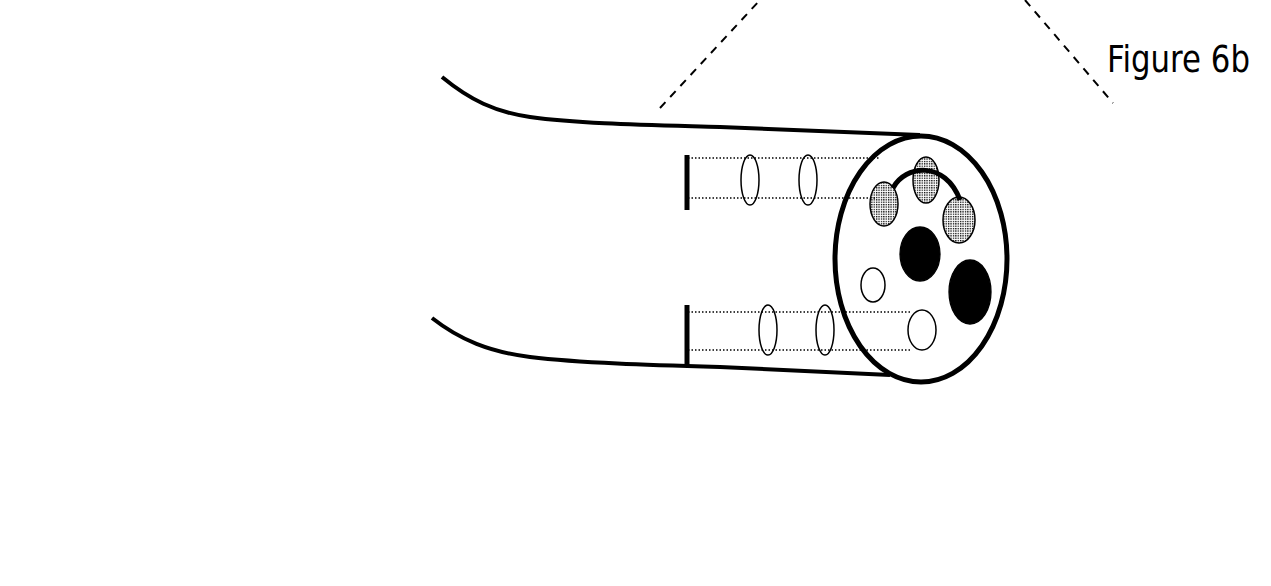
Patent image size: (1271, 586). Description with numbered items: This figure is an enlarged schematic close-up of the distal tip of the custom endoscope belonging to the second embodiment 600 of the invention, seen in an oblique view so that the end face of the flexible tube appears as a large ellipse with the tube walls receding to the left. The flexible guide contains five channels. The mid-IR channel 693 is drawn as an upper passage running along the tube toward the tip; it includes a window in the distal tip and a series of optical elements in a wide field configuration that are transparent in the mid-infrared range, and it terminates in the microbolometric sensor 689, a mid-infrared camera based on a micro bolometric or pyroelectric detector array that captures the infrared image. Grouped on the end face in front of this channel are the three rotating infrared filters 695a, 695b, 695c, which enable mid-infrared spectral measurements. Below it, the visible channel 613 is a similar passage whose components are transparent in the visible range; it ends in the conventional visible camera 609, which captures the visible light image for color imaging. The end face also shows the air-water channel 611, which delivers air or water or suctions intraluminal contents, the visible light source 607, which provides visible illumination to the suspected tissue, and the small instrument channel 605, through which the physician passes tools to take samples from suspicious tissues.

The second embodiment 600 is at (569, 264).
The mid-infrared sensor 689 is at (687, 157).
The visible camera 609 is at (687, 363).
The mid-IR channel 693 is at (921, 158).
The visible channel 613 is at (915, 350).
The rotating infrared filter 695a is at (884, 182).
The rotating infrared filter 695b is at (937, 162).
The rotating infrared filter 695c is at (975, 217).
The air-water channel 611 is at (940, 257).
The instrument channel 605 is at (975, 325).
The visible light source 607 is at (861, 285).